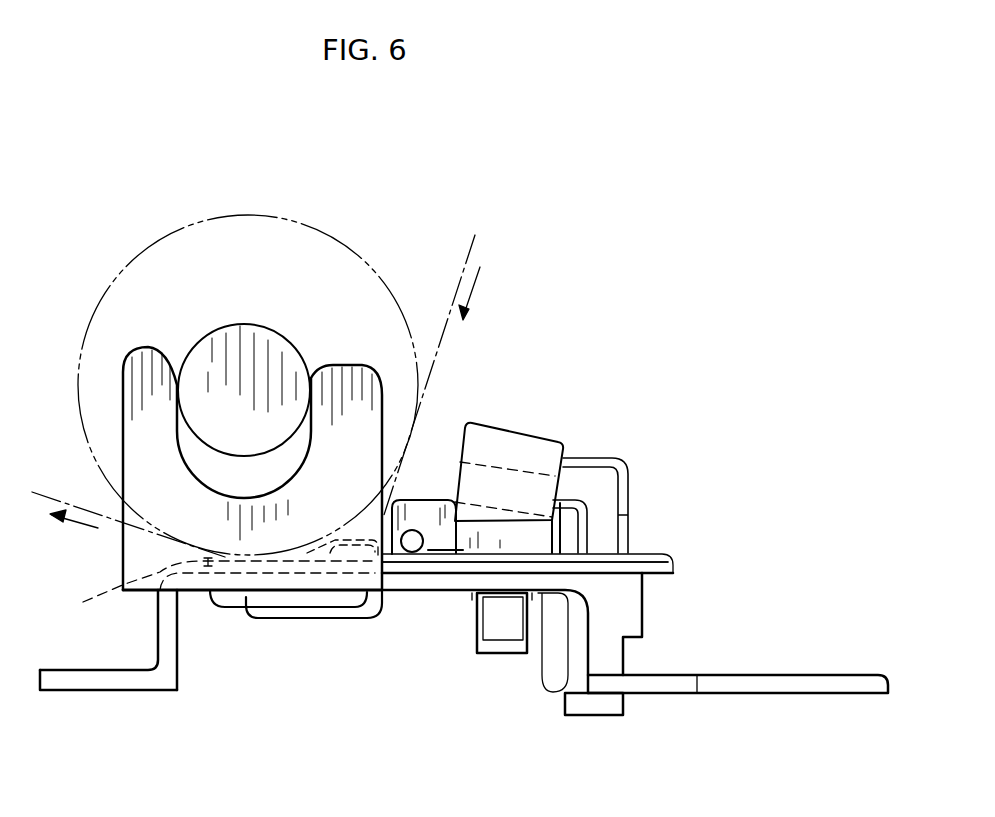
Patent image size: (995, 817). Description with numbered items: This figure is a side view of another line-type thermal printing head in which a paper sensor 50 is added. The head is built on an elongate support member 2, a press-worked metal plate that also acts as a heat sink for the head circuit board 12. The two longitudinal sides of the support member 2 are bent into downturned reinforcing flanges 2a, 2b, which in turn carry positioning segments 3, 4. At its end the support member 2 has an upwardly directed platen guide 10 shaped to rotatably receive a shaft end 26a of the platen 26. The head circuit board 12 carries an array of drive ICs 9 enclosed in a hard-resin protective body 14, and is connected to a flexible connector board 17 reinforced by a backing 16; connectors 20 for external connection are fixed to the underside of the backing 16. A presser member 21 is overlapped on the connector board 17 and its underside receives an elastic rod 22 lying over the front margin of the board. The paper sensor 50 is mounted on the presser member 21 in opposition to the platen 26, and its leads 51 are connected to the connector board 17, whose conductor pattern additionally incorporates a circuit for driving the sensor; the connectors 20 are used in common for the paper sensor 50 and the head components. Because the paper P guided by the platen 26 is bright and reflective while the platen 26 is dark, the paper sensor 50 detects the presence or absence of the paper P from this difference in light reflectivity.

The paper P is at (462, 272).
The support member 2 is at (400, 583).
The reinforcing flange 2a is at (173, 635).
The reinforcing flange 2b is at (573, 655).
The positioning segment 3 is at (80, 693).
The positioning segment 4 is at (782, 687).
The drive IC 9 is at (357, 552).
The platen guide 10 is at (133, 443).
The head circuit board 12 is at (214, 585).
The protective body 14 is at (330, 552).
The backing 16 is at (640, 563).
The flexible connector board 17 is at (667, 553).
The connector 20 is at (632, 613).
The presser member 21 is at (435, 538).
The elastic rod 22 is at (408, 547).
The platen 26 is at (270, 247).
The shaft end 26a is at (203, 353).
The paper sensor 50 is at (517, 450).
The lead 51 is at (622, 462).